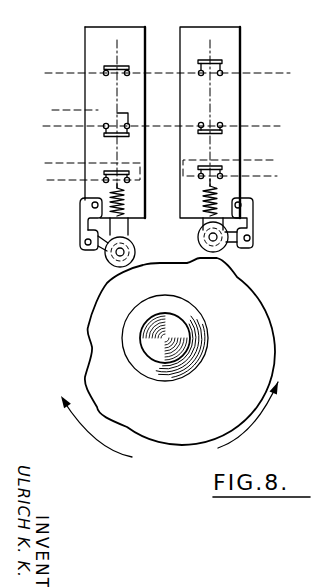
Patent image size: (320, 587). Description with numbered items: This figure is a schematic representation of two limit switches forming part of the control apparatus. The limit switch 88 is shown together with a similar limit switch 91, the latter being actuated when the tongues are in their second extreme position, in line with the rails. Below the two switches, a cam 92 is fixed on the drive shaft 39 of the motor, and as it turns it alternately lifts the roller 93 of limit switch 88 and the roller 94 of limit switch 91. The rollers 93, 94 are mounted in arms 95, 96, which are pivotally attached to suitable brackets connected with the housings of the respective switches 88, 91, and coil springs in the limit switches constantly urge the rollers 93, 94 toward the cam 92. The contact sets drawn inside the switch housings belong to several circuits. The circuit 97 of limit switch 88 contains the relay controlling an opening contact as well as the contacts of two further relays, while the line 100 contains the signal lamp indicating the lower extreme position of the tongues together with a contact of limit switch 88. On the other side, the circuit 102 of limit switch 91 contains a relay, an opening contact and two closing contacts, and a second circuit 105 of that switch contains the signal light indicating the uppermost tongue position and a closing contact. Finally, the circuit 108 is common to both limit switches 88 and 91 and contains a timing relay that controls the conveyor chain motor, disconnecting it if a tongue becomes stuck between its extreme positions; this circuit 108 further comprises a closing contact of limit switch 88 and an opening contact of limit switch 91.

The drive shaft 39 is at (145, 348).
The limit switch 88 is at (244, 100).
The limit switch 91 is at (80, 95).
The cam 92 is at (250, 327).
The roller 93 is at (224, 249).
The roller 94 is at (110, 262).
The arm 95 is at (255, 222).
The arm 96 is at (95, 243).
The circuit 97 is at (250, 162).
The line 100 is at (97, 110).
The circuit 102 is at (63, 163).
The second circuit 105 is at (72, 127).
The circuit 108 is at (73, 73).